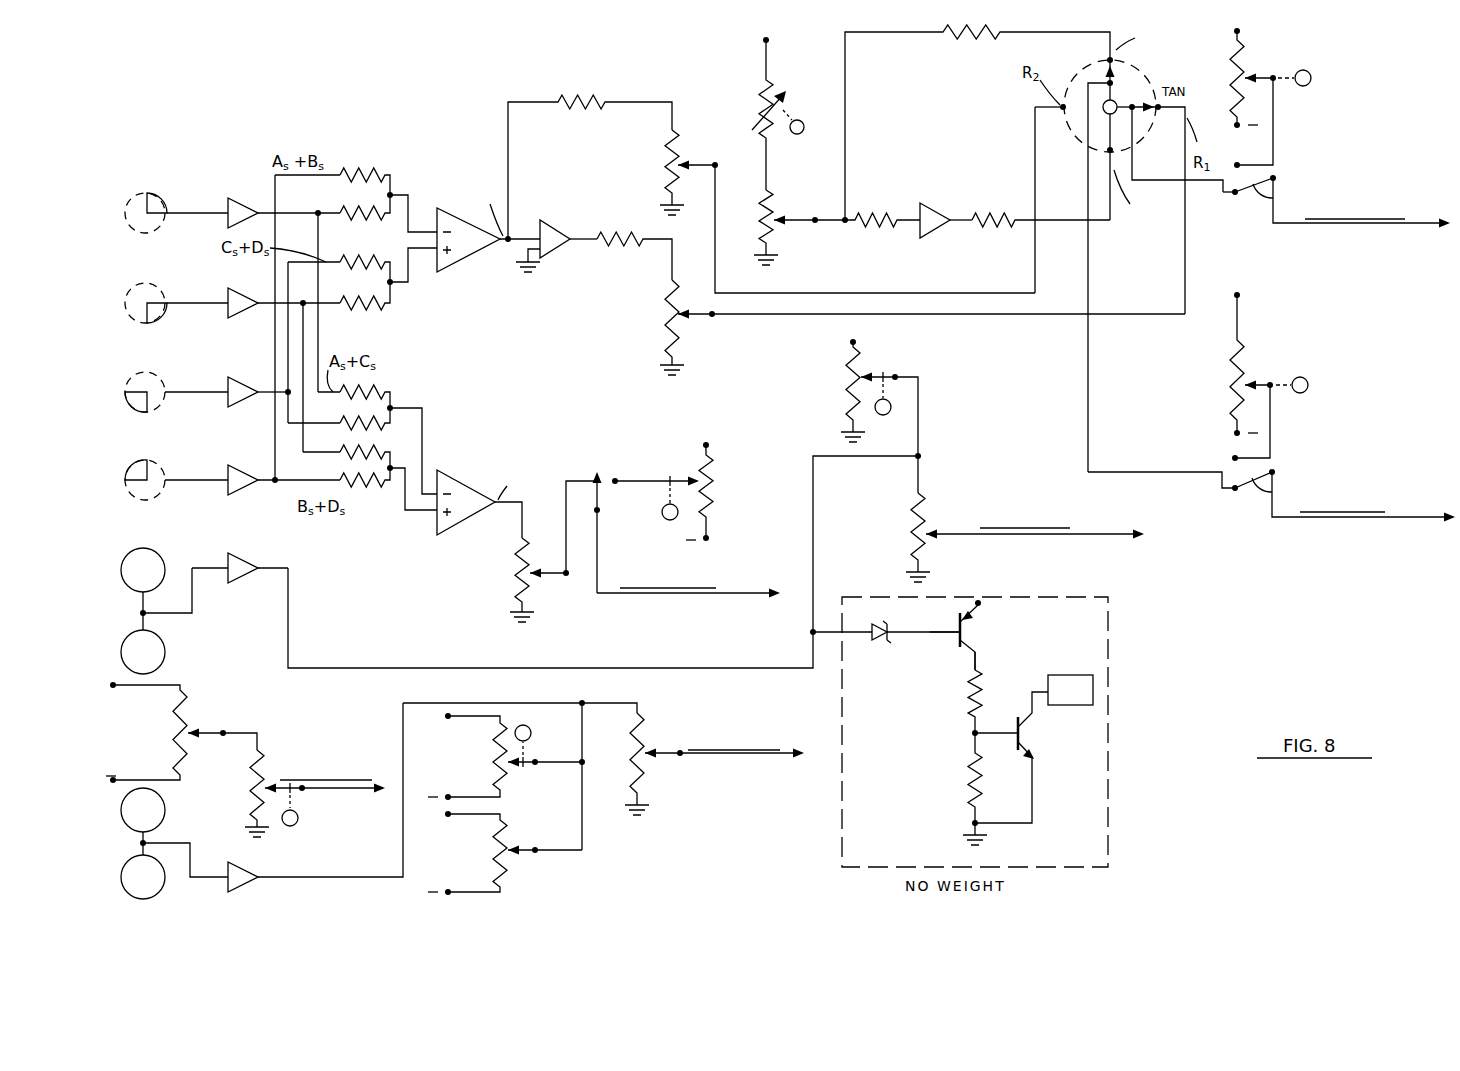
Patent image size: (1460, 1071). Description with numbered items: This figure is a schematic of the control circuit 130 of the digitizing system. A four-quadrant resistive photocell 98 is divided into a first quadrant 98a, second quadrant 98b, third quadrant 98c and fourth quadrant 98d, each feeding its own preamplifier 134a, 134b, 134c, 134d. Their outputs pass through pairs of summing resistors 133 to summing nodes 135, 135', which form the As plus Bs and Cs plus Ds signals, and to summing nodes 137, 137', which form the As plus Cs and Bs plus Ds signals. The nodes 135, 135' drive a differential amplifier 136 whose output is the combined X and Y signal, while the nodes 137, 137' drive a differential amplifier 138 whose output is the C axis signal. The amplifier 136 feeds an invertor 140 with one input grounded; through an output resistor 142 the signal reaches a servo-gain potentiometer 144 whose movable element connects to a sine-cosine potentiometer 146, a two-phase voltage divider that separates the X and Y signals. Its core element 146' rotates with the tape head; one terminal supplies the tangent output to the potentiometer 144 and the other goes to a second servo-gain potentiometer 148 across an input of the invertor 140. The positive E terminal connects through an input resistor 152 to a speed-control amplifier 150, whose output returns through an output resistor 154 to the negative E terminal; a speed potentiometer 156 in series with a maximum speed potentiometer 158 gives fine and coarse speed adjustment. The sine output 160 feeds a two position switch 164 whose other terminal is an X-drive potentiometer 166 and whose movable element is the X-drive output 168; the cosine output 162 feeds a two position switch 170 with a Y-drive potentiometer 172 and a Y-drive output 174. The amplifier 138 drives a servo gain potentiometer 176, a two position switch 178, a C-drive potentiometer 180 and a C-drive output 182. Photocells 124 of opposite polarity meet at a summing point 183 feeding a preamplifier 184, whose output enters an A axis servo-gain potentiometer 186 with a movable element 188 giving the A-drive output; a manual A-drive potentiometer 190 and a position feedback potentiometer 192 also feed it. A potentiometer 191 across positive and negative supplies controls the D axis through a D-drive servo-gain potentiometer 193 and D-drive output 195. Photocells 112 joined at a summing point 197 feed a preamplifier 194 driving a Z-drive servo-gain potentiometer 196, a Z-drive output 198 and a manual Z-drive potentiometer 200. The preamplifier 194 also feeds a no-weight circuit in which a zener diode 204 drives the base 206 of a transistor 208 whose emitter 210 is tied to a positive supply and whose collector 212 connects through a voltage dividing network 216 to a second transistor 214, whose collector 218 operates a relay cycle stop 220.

The photocell 98 is at (151, 186).
The first quadrant 98a is at (162, 200).
The second quadrant 98b is at (134, 470).
The third quadrant 98c is at (136, 404).
The fourth quadrant 98d is at (152, 312).
The preamplifier 134a is at (238, 198).
The preamplifier 134b is at (234, 470).
The preamplifier 134c is at (232, 380).
The preamplifier 134d is at (233, 290).
The summing resistors 133 is at (359, 172).
The summing node 135 is at (420, 188).
The summing node 135' is at (420, 285).
The differential amplifier 136 is at (447, 258).
The summing node 137 is at (426, 434).
The summing node 137' is at (412, 508).
The differential amplifier 138 is at (451, 492).
The invertor 140 is at (548, 226).
The output resistor 142 is at (620, 236).
The servo-gain potentiometer 144 is at (666, 318).
The second servo-gain potentiometer 148 is at (681, 152).
The speed-control amplifier 150 is at (933, 240).
The input resistor 152 is at (880, 212).
The output resistor 154 is at (996, 213).
The speed potentiometer 156 is at (776, 202).
The maximum speed potentiometer 158 is at (781, 100).
The sine-cosine potentiometer 146 is at (1141, 122).
The central rotatable core element 146' is at (1113, 120).
The sine output 160 is at (1196, 184).
The cosine output 162 is at (1092, 303).
The two position switch 164 is at (1286, 181).
The X-drive potentiometer 166 is at (1244, 60).
The X-drive output 168 is at (1313, 226).
The two position switch 170 is at (1280, 477).
The Y-drive potentiometer 172 is at (1236, 368).
The Y-drive output 174 is at (1313, 520).
The servo gain potentiometer 176 is at (516, 553).
The two position switch 178 is at (598, 478).
The C-drive potentiometer 180 is at (712, 480).
The C-drive output 182 is at (643, 596).
The A axis servo-gain potentiometer 186 is at (646, 750).
The movable element 188 is at (703, 756).
The A-drive manually operable potentiometer 190 is at (501, 762).
The position feedback potentiometer 192 is at (501, 865).
The preamplifier 194 is at (243, 558).
The photocells 112 is at (146, 596).
The summing point 197 is at (140, 614).
The potentiometer 191 is at (193, 726).
The D-drive servo-gain potentiometer 193 is at (271, 789).
The D-drive output 195 is at (315, 793).
The photocells 124 is at (152, 808).
The summing point 183 is at (140, 843).
The preamplifier 184 is at (259, 884).
The Z-drive servo-gain potentiometer 196 is at (928, 520).
The Z-drive output 198 is at (1040, 538).
The manually operable Z-drive potentiometer 200 is at (869, 366).
The zener diode 204 is at (886, 648).
The base 206 is at (957, 641).
The transistor 208 is at (1000, 622).
The emitter 210 is at (977, 600).
The collector 212 is at (977, 648).
The second transistor 214 is at (1044, 735).
The resistor 216 is at (1023, 752).
The collector 218 is at (1030, 712).
The relay cycle stop 220 is at (1094, 690).
The control circuit 130 is at (1212, 602).